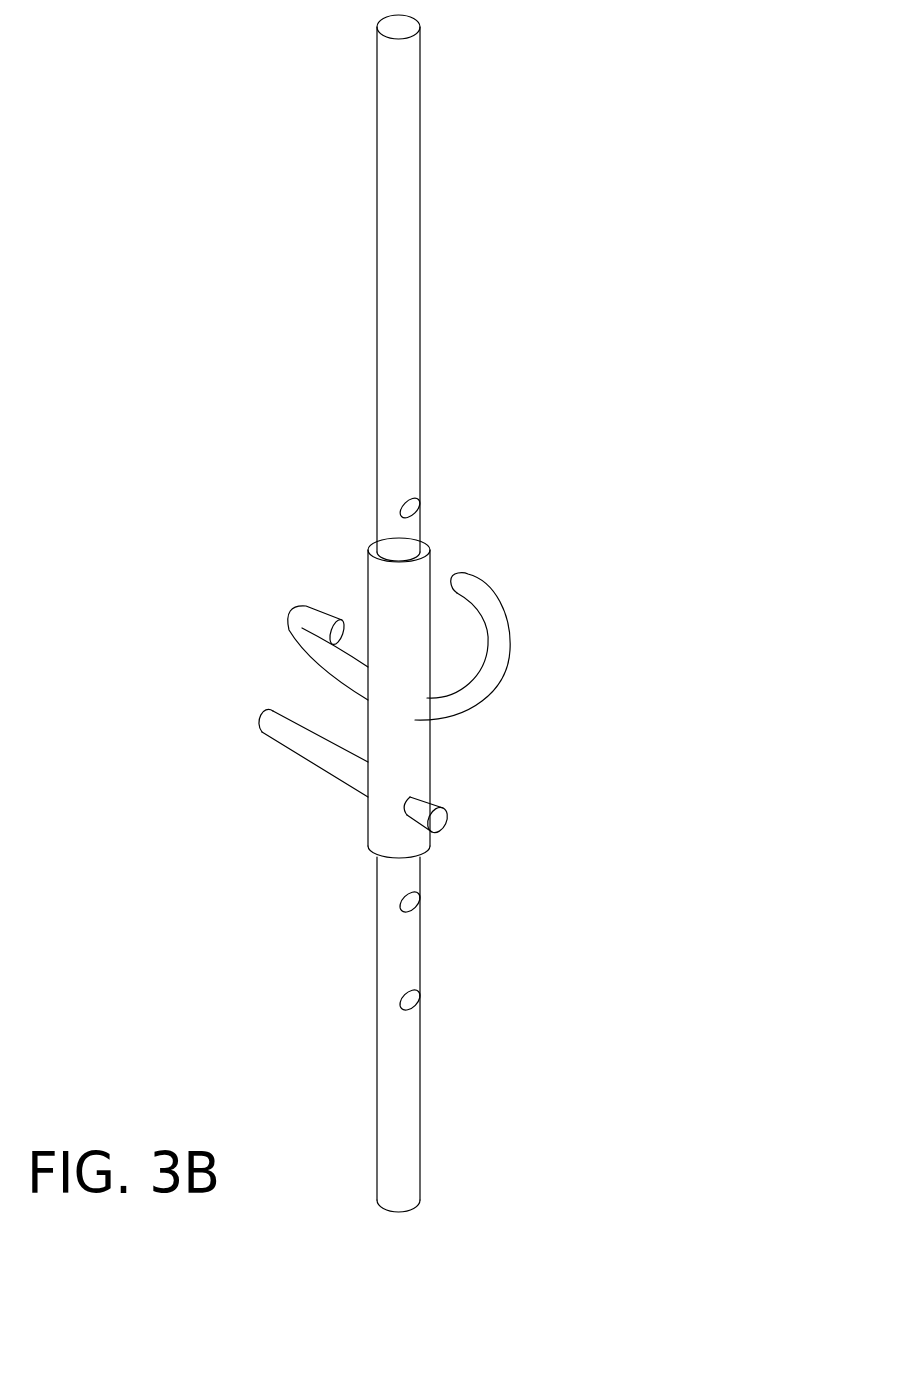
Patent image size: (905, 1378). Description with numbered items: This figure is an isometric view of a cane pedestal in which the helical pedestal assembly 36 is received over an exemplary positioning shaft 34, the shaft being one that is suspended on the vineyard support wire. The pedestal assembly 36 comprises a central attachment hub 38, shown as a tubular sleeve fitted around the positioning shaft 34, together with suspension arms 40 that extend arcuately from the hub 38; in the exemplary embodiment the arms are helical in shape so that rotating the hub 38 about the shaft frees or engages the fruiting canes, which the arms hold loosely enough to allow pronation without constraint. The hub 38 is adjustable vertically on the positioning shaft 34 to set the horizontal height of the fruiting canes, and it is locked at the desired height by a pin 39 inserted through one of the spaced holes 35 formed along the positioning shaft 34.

The positioning shaft 34 is at (405, 243).
The spaced holes 35 is at (413, 507).
The helical pedestal assembly 36 is at (532, 528).
The central attachment hub 38 is at (408, 770).
The pin 39 is at (310, 752).
The suspension arms 40 is at (312, 608).